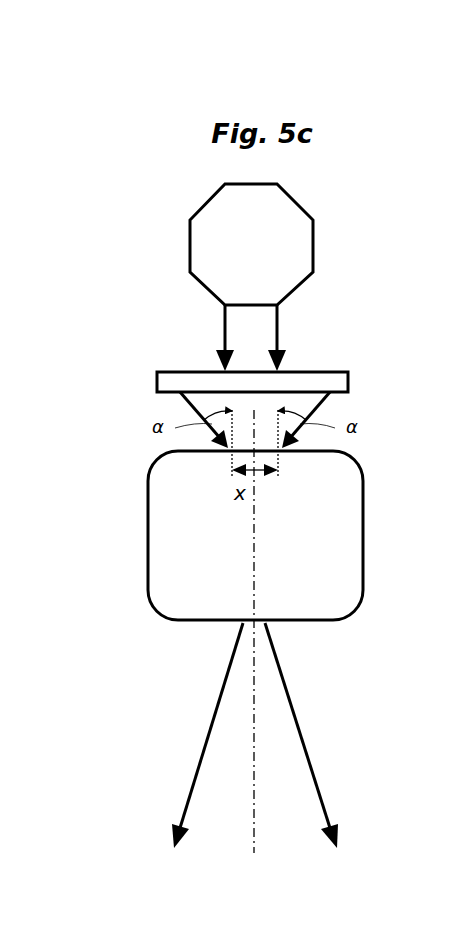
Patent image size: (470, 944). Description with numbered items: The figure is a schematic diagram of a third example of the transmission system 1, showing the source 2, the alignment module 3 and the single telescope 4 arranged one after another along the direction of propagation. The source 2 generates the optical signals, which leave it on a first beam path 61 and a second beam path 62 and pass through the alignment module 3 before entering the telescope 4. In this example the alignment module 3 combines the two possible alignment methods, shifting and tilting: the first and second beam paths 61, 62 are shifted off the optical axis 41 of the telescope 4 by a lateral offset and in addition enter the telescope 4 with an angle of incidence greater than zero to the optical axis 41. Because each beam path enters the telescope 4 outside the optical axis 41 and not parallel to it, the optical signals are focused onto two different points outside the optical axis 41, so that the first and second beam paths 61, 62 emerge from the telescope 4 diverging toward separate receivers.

The transmission system 1 is at (139, 178).
The source 2 is at (220, 232).
The alignment module 3 is at (165, 382).
The telescope 4 is at (176, 551).
The optical axis 41 is at (256, 563).
The first beam path 61 is at (222, 322).
The second beam path 62 is at (277, 322).